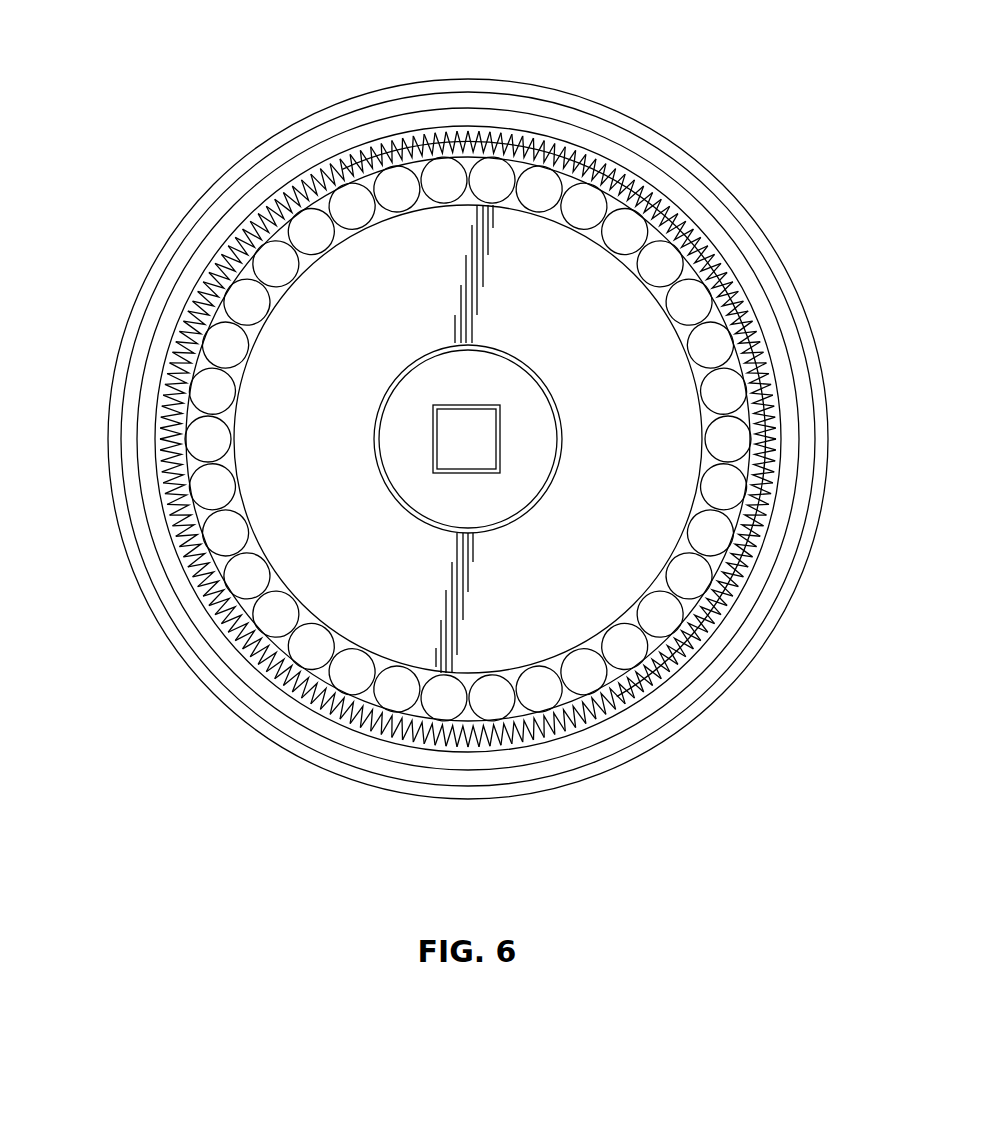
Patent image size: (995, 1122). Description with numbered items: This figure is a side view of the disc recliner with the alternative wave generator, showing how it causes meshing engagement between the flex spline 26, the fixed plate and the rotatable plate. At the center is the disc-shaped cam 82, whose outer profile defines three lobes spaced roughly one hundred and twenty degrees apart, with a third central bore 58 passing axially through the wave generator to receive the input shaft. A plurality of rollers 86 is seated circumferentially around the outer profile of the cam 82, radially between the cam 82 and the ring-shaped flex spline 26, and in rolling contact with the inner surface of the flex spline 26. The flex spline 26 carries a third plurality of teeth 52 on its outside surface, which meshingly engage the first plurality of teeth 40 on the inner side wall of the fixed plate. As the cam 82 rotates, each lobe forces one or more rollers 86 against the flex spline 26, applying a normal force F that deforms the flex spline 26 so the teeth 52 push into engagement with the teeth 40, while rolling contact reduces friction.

The flex spline 26 is at (418, 145).
The first plurality of teeth 40 is at (442, 133).
The third plurality of teeth 52 is at (363, 160).
The third central bore 58 is at (466, 439).
The cam 82 is at (573, 278).
The rollers 86 is at (660, 250).
The normal force F is at (632, 210).